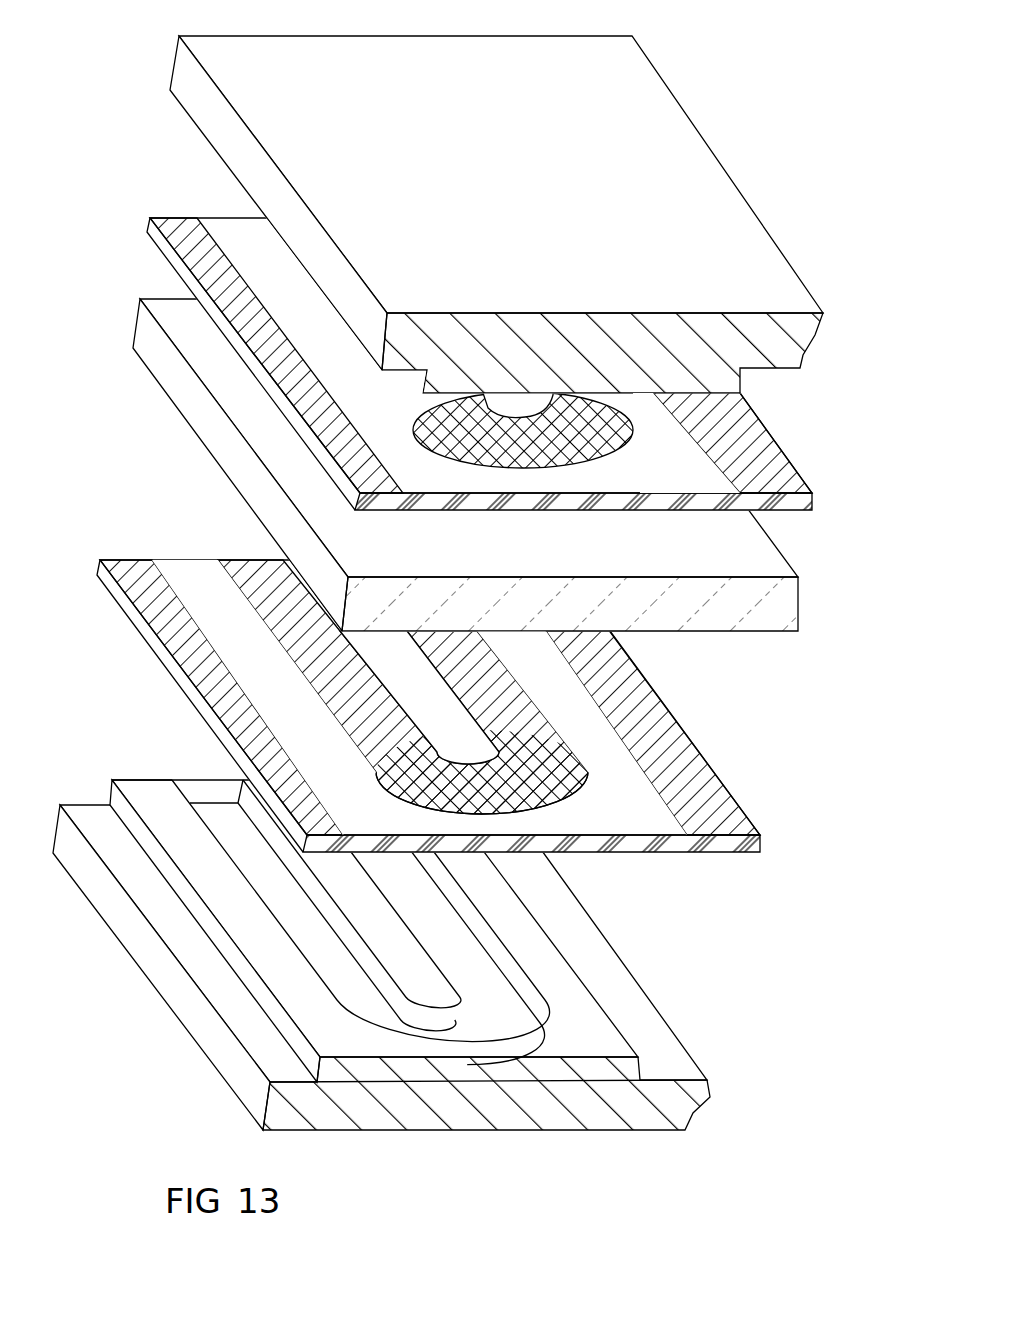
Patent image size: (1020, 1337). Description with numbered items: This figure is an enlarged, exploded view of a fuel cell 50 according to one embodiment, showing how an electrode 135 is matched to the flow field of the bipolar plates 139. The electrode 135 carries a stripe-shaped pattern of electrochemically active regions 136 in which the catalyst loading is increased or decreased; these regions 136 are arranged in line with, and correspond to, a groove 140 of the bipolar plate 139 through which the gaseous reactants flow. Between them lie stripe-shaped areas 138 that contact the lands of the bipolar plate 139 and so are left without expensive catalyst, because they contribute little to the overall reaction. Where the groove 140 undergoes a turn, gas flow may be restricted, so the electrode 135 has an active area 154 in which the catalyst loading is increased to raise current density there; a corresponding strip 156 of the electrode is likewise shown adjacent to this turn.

The chip body 50 is at (797, 631).
The electrode 135 is at (808, 516).
The electrochemically active regions 136 is at (183, 231).
The stripe-shaped areas 138 is at (660, 471).
The bipolar plate 139 is at (459, 623).
The groove 140 is at (487, 1008).
The active area 154 is at (540, 772).
The adhesive strip 156 is at (498, 708).